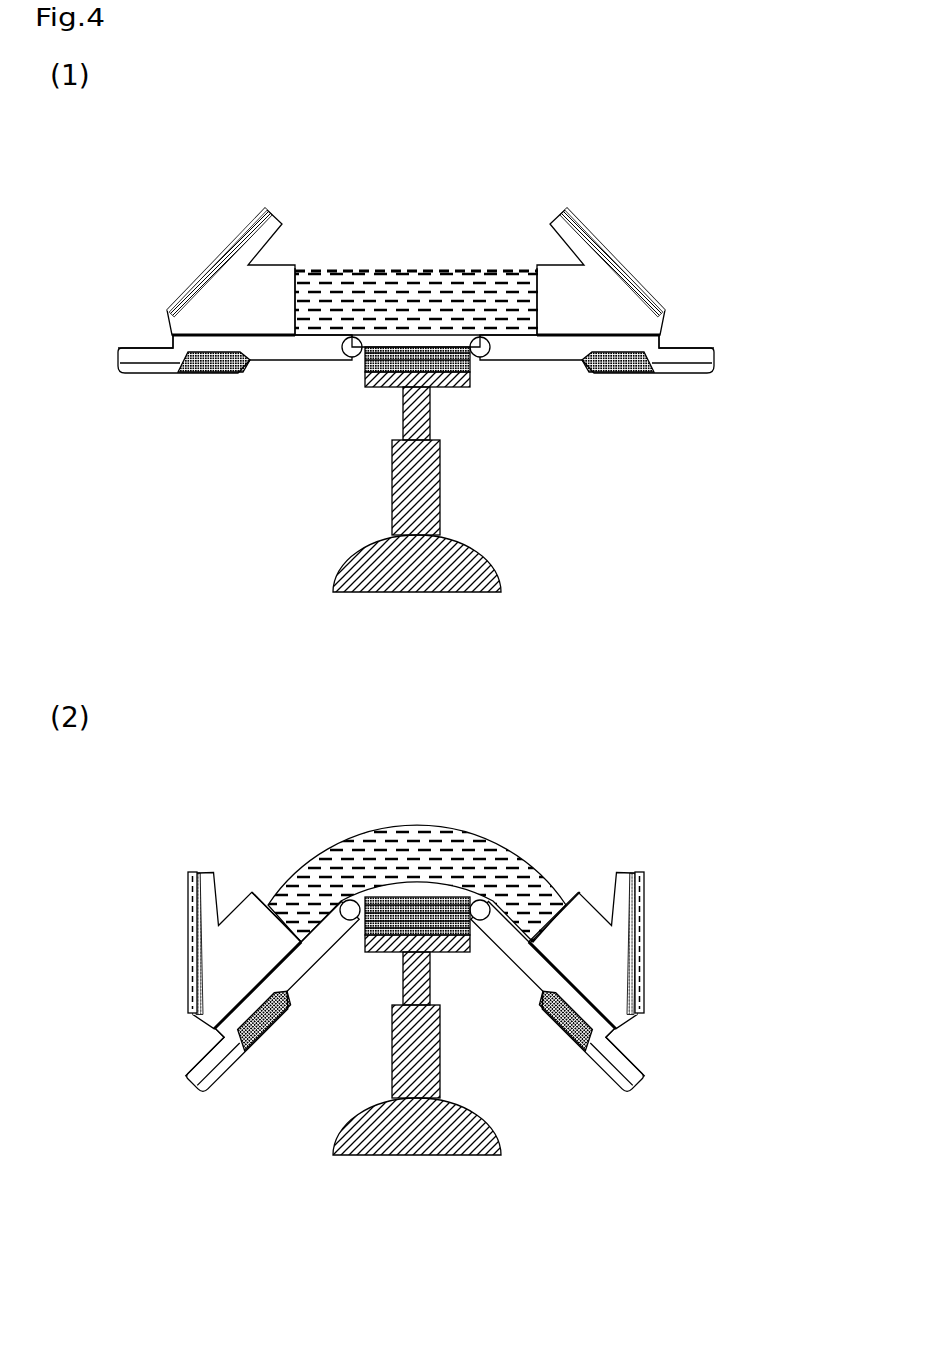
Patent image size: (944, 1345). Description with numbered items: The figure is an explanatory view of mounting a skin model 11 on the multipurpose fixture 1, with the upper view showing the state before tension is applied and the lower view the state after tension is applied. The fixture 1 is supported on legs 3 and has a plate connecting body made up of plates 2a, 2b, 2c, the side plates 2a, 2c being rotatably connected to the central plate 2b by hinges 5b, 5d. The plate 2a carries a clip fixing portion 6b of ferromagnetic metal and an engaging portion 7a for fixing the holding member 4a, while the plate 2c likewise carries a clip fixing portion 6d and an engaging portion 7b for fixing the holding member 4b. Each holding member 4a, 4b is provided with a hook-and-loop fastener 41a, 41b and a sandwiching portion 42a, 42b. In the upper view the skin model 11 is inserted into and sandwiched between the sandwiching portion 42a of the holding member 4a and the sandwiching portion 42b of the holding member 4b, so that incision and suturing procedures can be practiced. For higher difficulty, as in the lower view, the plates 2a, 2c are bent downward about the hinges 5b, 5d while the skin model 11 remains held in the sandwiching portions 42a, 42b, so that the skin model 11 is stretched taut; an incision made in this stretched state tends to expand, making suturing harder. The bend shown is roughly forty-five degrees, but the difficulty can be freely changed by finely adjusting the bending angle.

The multipurpose fixture 1 is at (786, 203).
The skin model 11 is at (410, 300).
The plate 2a is at (275, 350).
The plate 2b is at (397, 350).
The plate 2c is at (555, 347).
The legs 3 is at (420, 513).
The holding member 4a is at (283, 222).
The holding member 4b is at (556, 215).
The hook-and-loop fastener 41a is at (213, 252).
The hook-and-loop fastener 41b is at (610, 248).
The sandwiching portion 42a is at (268, 295).
The sandwiching portion 42b is at (563, 295).
The hinge 5b is at (350, 358).
The hinge 5d is at (478, 358).
The clip fixing portion 6b is at (143, 358).
The clip fixing portion 6d is at (688, 360).
The engaging portion 7a is at (205, 358).
The engaging portion 7b is at (622, 363).